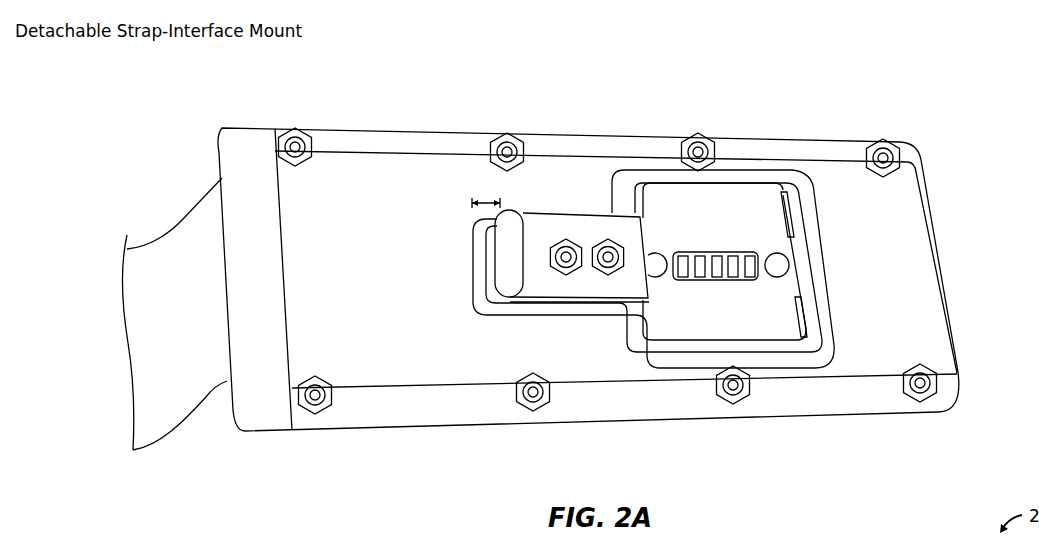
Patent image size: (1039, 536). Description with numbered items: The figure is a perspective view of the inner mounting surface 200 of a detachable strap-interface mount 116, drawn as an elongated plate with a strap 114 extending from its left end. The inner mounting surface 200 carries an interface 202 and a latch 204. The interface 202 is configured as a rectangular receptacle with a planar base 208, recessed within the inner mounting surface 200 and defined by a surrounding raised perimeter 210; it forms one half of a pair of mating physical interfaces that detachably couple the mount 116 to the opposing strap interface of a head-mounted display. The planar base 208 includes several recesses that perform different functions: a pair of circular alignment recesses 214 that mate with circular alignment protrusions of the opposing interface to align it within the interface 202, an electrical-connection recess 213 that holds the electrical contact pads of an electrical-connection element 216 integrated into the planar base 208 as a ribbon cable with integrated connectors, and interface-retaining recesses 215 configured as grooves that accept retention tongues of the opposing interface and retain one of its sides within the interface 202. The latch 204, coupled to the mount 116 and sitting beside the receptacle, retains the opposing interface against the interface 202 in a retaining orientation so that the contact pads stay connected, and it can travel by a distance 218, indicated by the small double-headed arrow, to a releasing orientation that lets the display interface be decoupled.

The strap 114 is at (182, 220).
The detachable strap-interface mount 116 is at (331, 67).
The inner mounting surface 200 is at (392, 386).
The interface 202 is at (650, 183).
The latch 204 is at (557, 303).
The planar base 208 is at (683, 317).
The raised perimeter 210 is at (822, 327).
The electrical-connection recess 213 is at (708, 282).
The circular alignment recesses 214 is at (655, 258).
The interface-retaining recesses 215 is at (782, 220).
The electrical-connection element 216 is at (723, 267).
The distance 218 is at (485, 202).